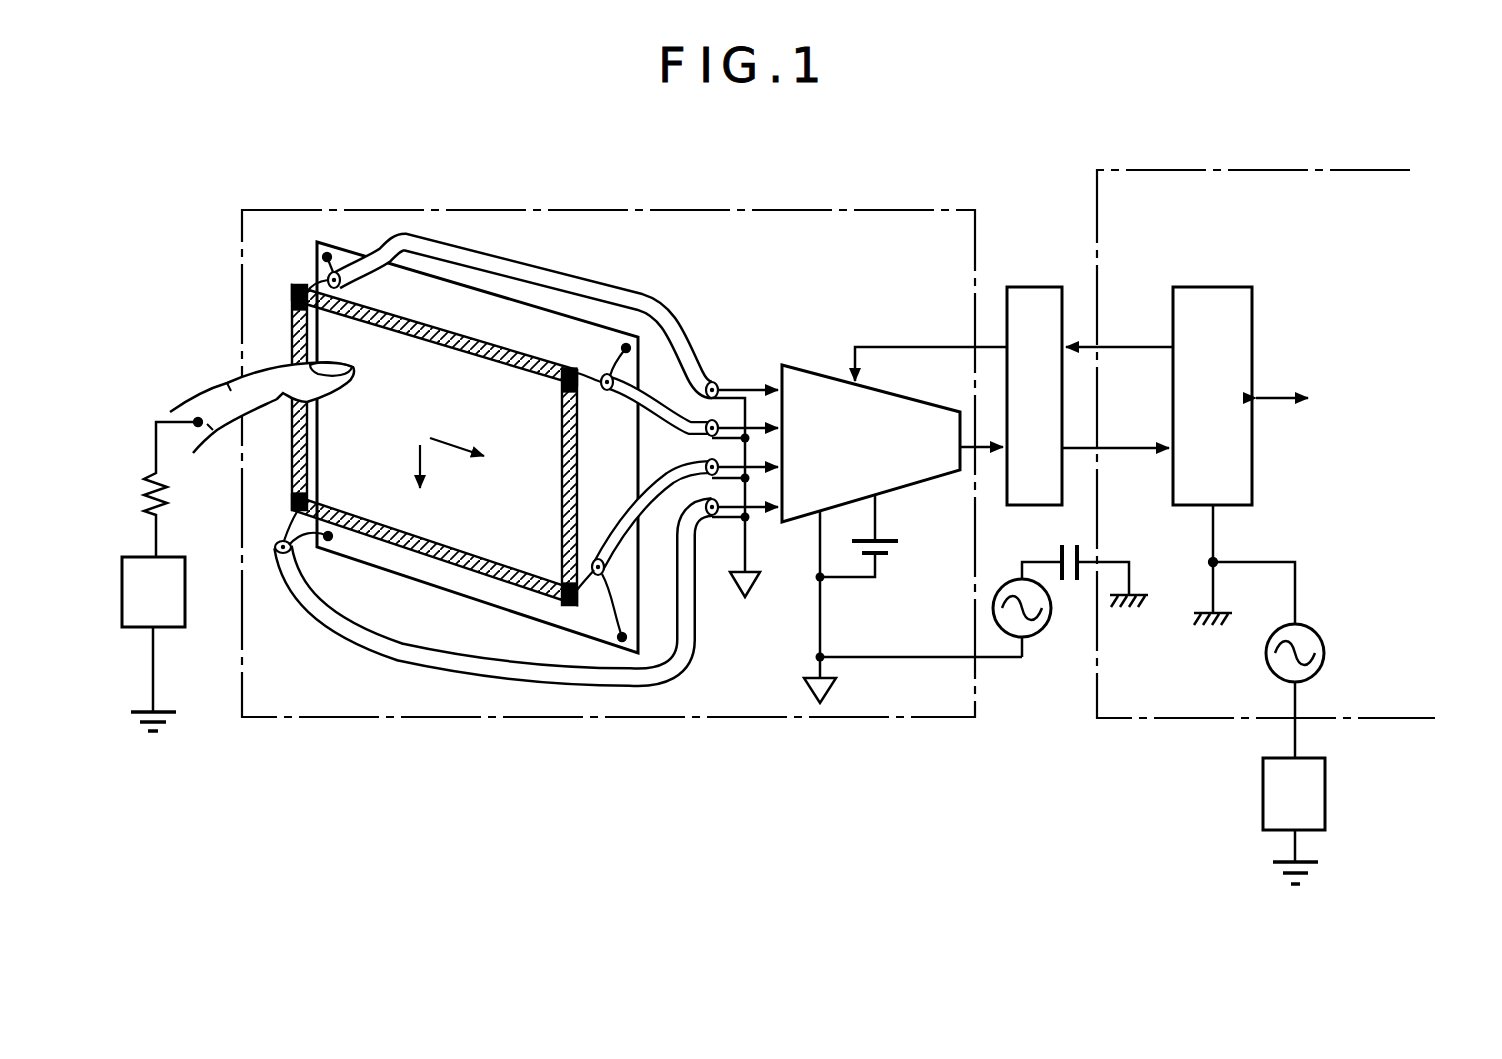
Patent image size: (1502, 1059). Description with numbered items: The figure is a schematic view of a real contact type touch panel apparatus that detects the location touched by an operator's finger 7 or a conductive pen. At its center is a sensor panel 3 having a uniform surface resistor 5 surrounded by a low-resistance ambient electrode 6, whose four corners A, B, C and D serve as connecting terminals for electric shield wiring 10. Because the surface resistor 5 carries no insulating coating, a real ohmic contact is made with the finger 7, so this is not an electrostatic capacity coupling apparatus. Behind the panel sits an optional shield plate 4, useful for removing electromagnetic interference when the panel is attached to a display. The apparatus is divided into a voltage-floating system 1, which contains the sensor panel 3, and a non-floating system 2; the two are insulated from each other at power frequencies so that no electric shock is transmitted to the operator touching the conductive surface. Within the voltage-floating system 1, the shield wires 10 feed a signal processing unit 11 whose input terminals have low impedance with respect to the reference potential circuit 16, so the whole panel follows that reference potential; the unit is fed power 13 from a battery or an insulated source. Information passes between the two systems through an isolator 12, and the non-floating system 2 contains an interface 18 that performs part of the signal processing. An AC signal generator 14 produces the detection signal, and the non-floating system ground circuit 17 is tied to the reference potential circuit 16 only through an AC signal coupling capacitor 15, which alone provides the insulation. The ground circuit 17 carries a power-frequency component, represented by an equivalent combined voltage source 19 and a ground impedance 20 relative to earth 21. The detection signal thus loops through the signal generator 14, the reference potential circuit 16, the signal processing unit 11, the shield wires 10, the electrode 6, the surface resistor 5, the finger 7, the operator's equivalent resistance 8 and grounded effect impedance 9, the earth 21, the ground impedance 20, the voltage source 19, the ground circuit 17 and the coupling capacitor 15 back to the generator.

The voltage-floating system 1 is at (778, 206).
The non-floating system 2 is at (1130, 168).
The sensor panel 3 is at (435, 391).
The shield plate 4 is at (517, 325).
The surface resistor 5 is at (387, 405).
The ambient electrode 6 is at (467, 357).
The finger 7 is at (226, 380).
The equivalent resistance 8 is at (161, 495).
The grounded effect impedance 9 is at (185, 600).
The electric shield wiring 10 is at (640, 297).
The signal processing unit 11 is at (818, 373).
The isolator 12 is at (1035, 290).
The power 13 is at (898, 546).
The AC signal generator 14 is at (1002, 582).
The AC signal coupling capacitor 15 is at (1067, 580).
The reference potential circuit 16 is at (808, 680).
The non-floating system ground circuit 17 is at (1209, 630).
The interface 18 is at (1215, 290).
The equivalent combined voltage source 19 is at (1320, 632).
The ground impedance 20 is at (1325, 792).
The earth 21 is at (176, 717).